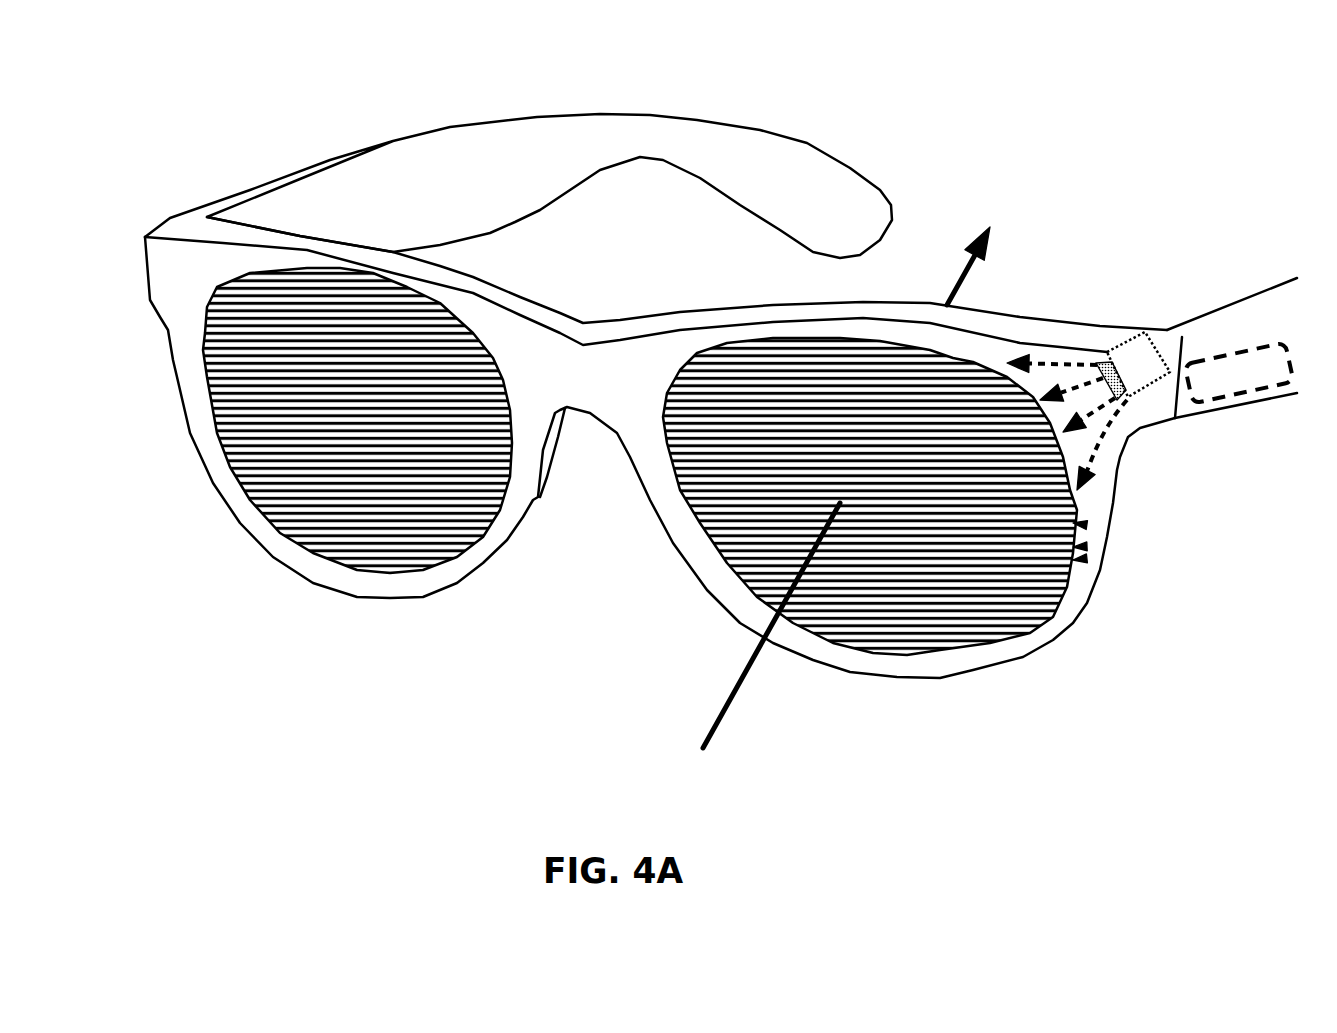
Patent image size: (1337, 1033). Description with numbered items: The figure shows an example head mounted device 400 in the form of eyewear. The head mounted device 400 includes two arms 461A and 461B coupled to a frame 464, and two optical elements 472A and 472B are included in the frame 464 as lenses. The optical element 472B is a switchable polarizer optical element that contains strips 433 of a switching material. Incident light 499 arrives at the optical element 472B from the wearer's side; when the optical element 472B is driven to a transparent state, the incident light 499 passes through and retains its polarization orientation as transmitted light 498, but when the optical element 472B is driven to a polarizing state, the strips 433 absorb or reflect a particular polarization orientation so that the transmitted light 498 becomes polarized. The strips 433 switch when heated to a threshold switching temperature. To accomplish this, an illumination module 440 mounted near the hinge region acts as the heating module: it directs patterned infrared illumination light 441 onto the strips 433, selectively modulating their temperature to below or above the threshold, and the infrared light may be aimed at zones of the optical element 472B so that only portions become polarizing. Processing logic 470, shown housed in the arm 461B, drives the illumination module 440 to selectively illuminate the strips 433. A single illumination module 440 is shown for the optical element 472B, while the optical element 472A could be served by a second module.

The head mounted device 400 is at (1218, 33).
The arm 461A is at (498, 202).
The arm 461B is at (1292, 328).
The frame 464 is at (195, 280).
The optical element 472A is at (262, 547).
The switchable polarizer optical element 472B is at (1070, 630).
The incident light 499 is at (761, 643).
The transmitted light 498 is at (982, 254).
The strips 433 is at (1087, 525).
The patterned infrared illumination light 441 is at (1053, 363).
The illumination module 440 is at (1148, 333).
The processing logic 470 is at (1253, 385).